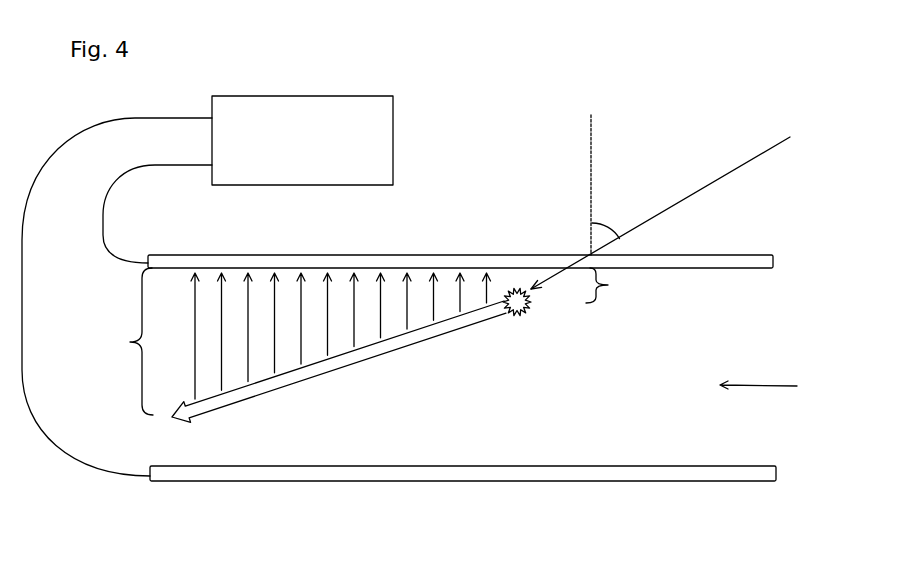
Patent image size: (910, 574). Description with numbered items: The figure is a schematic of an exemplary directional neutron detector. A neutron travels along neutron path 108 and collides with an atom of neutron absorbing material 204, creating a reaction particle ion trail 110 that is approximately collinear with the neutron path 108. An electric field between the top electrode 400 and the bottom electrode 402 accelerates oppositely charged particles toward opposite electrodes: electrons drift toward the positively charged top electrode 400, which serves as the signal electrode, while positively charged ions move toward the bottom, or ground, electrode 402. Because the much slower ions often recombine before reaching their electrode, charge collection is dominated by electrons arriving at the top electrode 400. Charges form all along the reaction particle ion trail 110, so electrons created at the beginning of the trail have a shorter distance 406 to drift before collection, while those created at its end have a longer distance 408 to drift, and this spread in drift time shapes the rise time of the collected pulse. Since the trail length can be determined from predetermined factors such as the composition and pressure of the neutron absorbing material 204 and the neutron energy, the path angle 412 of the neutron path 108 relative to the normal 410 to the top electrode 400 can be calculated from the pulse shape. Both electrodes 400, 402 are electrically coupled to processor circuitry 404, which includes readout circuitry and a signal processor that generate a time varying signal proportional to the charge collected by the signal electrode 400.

The neutron path 108 is at (683, 200).
The reaction particle ion trail 110 is at (335, 368).
The neutron absorbing material 204 is at (774, 388).
The top electrode 400 is at (387, 255).
The bottom electrode 402 is at (512, 481).
The processor circuitry 404 is at (393, 137).
The shorter distance 406 is at (617, 285).
The longer distance 408 is at (288, 341).
The normal 410 is at (591, 162).
The path angle 412 is at (613, 217).